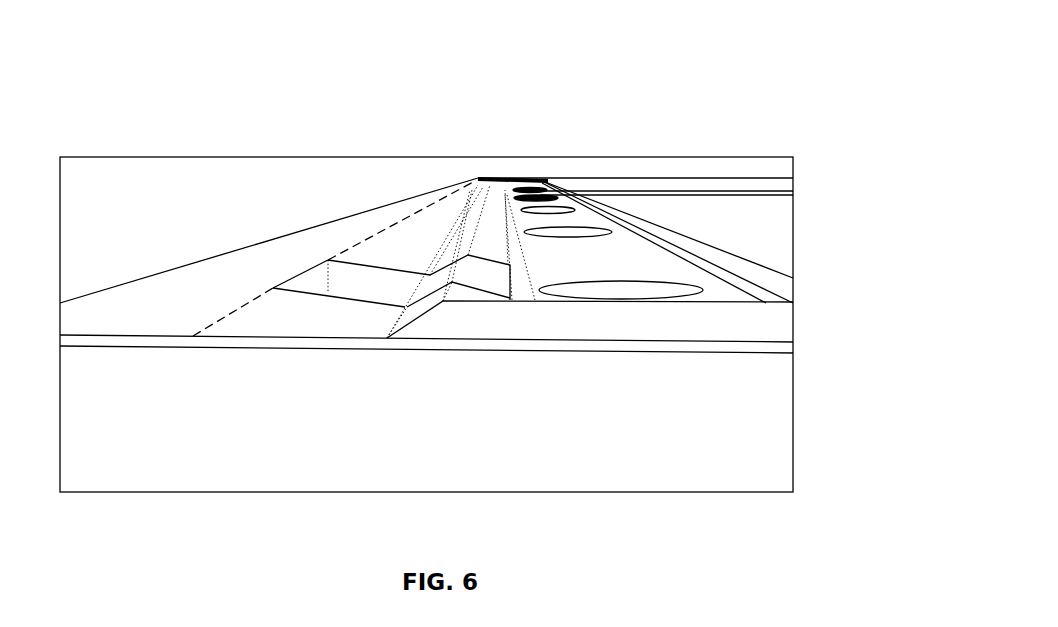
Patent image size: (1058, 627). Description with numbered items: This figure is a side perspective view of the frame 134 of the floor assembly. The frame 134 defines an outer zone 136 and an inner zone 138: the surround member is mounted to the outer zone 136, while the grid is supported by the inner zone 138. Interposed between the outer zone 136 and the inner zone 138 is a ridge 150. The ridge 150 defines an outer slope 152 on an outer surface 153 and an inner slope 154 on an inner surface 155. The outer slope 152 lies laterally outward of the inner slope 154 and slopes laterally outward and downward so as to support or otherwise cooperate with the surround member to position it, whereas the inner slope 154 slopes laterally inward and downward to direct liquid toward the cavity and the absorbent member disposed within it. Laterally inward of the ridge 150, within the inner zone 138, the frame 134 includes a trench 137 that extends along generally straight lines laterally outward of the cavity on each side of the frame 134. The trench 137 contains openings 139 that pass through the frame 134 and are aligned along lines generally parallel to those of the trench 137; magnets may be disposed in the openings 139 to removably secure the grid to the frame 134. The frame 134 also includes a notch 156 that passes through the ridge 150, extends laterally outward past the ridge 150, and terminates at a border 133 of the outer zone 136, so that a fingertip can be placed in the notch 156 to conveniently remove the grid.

The border 133 is at (261, 308).
The frame 134 is at (145, 480).
The outer zone 136 is at (213, 285).
The trench 137 is at (626, 263).
The inner zone 138 is at (549, 155).
The openings 139 is at (667, 286).
The ridge 150 is at (462, 248).
The outer slope 152 is at (431, 248).
The outer surface 153 is at (440, 234).
The inner slope 154 is at (545, 190).
The inner surface 155 is at (510, 226).
The notch 156 is at (352, 284).